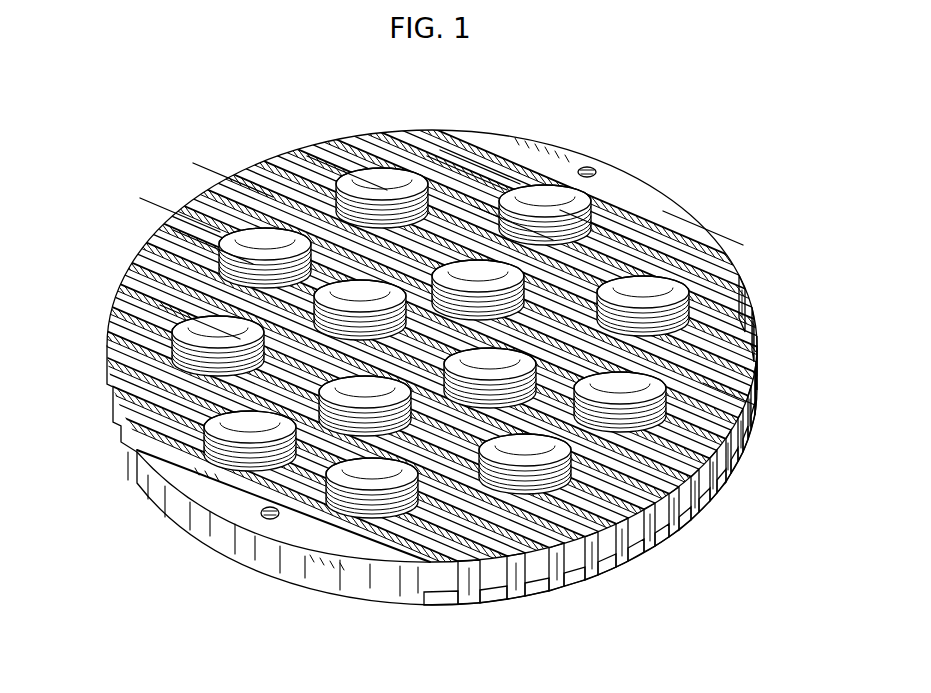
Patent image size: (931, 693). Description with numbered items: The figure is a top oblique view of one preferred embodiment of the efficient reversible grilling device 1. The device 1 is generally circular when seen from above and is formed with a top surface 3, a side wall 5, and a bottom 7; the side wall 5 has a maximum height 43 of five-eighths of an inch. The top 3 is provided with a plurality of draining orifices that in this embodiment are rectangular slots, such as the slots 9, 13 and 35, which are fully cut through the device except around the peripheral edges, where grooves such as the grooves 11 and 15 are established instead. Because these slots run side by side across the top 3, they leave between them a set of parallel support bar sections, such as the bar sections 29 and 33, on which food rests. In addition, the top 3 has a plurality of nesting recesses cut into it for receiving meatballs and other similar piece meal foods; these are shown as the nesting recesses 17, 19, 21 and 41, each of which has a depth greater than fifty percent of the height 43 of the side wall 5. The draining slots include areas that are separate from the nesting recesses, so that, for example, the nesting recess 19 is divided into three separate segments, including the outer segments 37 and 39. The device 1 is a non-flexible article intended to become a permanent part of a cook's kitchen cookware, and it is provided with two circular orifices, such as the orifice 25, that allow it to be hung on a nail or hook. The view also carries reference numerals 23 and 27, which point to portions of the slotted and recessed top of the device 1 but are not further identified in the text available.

The efficient reversible grilling device 1 is at (752, 256).
The top surface 3 is at (710, 222).
The side wall 5 is at (693, 492).
The bottom 7 is at (463, 602).
The slot 9 is at (700, 345).
The groove 11 is at (743, 400).
The slot 13 is at (233, 180).
The groove 15 is at (180, 215).
The nesting recess 17 is at (347, 173).
The nesting recess 19 is at (547, 213).
The nesting recess 21 is at (213, 247).
The rib 23 is at (200, 322).
The circular orifice 25 is at (267, 517).
The disc 27 is at (645, 388).
The support bar section 29 is at (480, 167).
The support bar section 33 is at (703, 228).
The slot 35 is at (467, 173).
The outer segment 37 is at (600, 227).
The outer segment 39 is at (513, 223).
The nesting recess 41 is at (700, 470).
The maximum height 43 is at (303, 575).